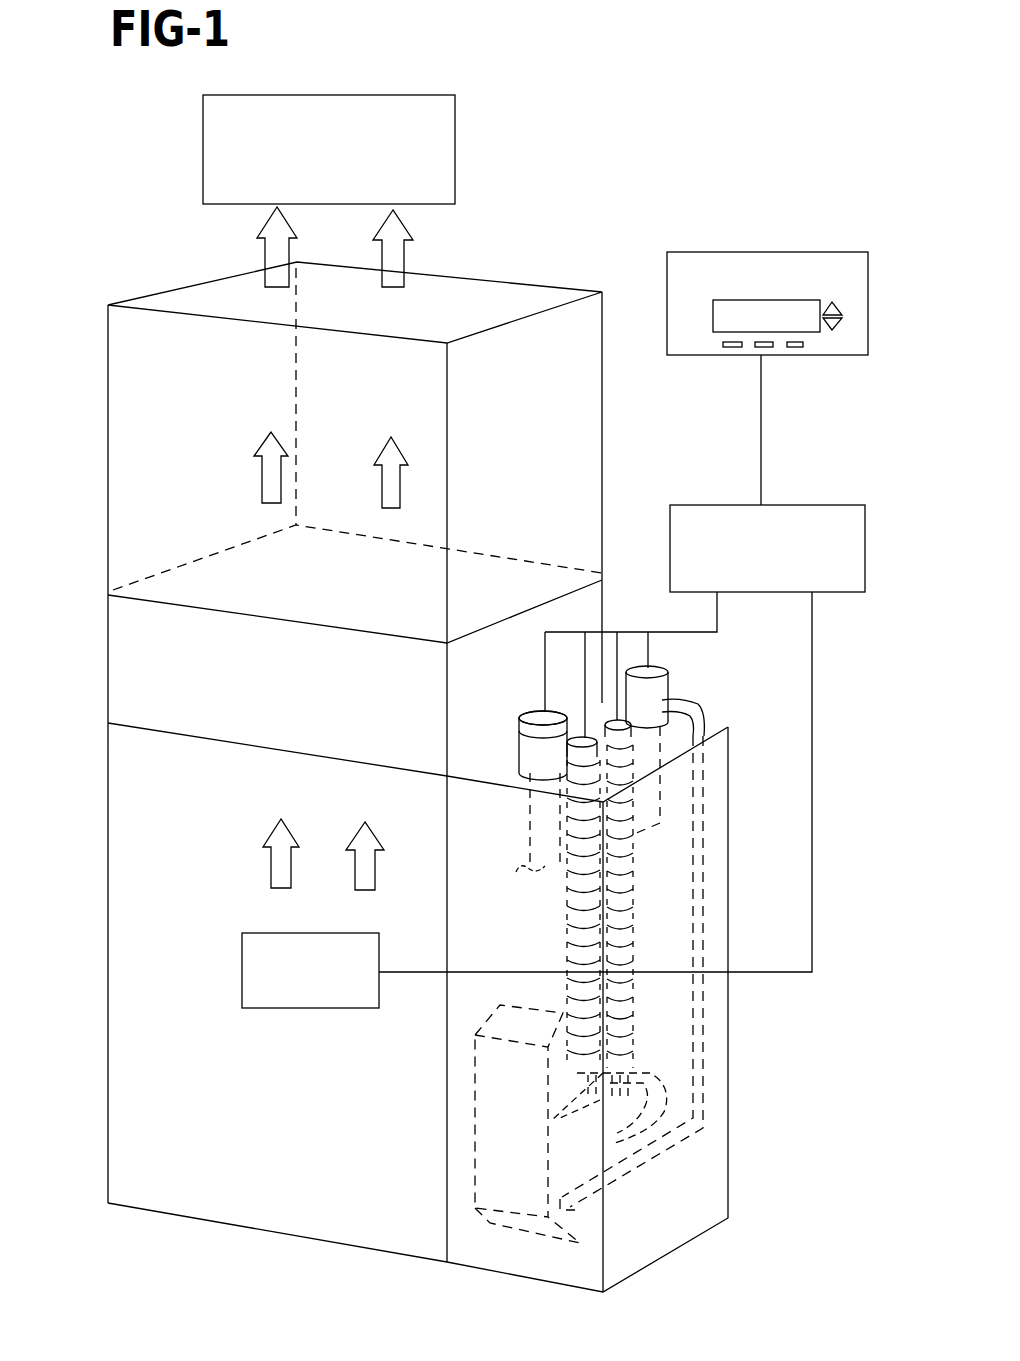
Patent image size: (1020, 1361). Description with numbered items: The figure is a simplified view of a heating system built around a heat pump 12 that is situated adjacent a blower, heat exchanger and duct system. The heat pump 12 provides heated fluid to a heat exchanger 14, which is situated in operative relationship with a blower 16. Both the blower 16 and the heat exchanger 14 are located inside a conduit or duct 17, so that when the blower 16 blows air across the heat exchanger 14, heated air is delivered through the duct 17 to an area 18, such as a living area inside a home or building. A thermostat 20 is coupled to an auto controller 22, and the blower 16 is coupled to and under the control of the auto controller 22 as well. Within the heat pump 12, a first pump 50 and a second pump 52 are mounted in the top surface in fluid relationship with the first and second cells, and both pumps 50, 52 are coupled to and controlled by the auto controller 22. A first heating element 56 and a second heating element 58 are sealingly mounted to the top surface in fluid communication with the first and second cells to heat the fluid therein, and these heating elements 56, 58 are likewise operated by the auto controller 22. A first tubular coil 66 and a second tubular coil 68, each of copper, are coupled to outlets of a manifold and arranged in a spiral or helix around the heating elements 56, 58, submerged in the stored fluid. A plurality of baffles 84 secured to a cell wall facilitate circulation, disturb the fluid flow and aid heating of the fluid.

The heat pump 12 is at (740, 1043).
The heat exchanger 14 is at (100, 645).
The blower 16 is at (242, 968).
The conduit or duct 17 is at (108, 403).
The area 18 is at (203, 150).
The thermostat 20 is at (742, 252).
The auto controller 22 is at (718, 505).
The first pump 50 is at (530, 714).
The second pump 52 is at (675, 680).
The first heating element 56 is at (519, 740).
The second heating element 58 is at (694, 712).
The first tubular coil 66 is at (580, 900).
The second tubular coil 68 is at (632, 889).
The baffles 84 is at (480, 1117).